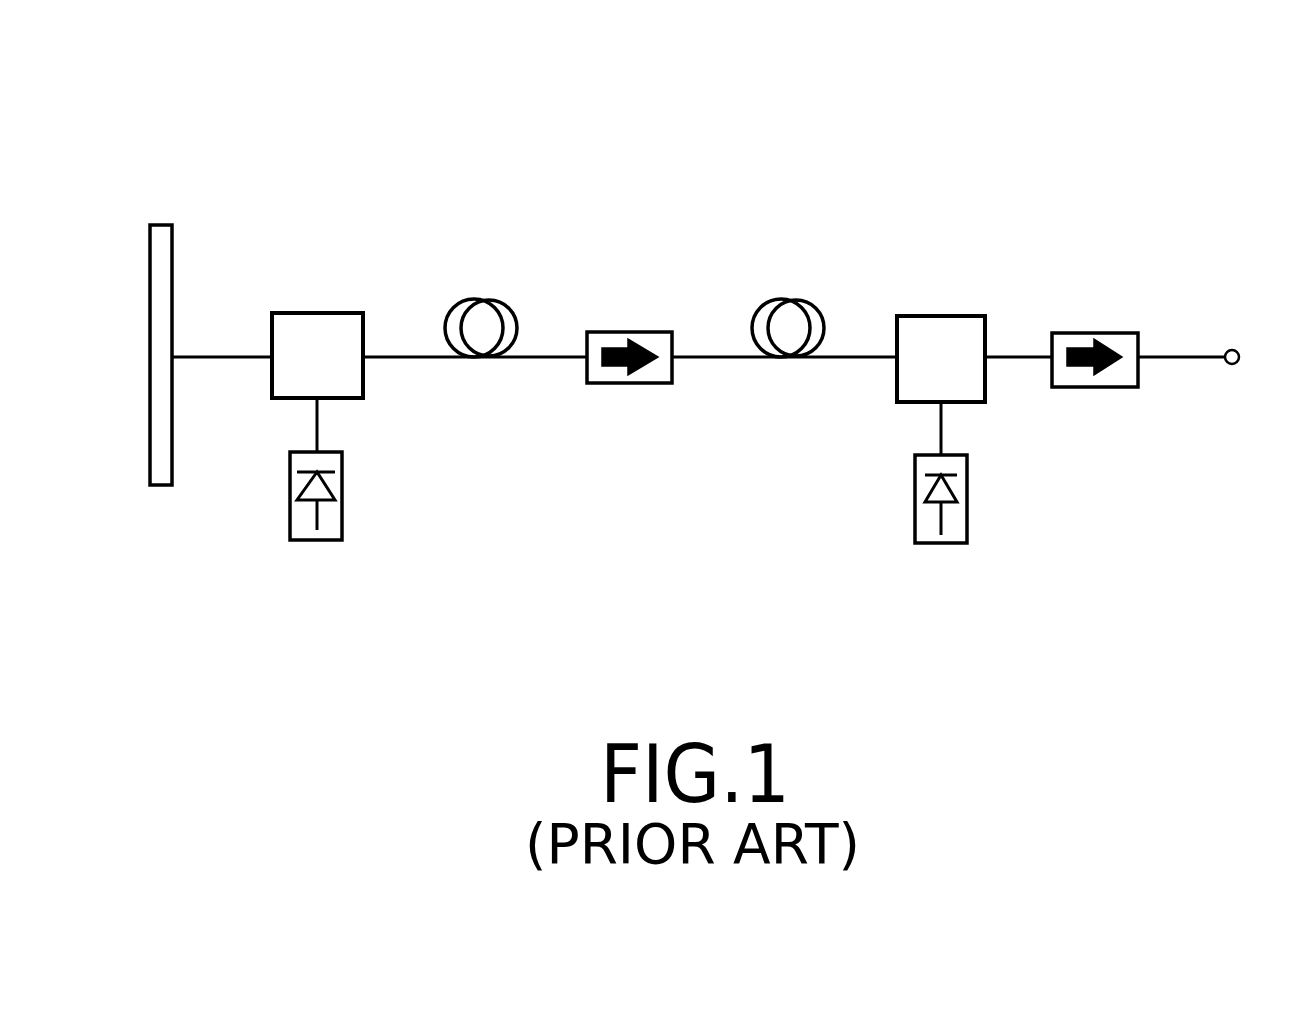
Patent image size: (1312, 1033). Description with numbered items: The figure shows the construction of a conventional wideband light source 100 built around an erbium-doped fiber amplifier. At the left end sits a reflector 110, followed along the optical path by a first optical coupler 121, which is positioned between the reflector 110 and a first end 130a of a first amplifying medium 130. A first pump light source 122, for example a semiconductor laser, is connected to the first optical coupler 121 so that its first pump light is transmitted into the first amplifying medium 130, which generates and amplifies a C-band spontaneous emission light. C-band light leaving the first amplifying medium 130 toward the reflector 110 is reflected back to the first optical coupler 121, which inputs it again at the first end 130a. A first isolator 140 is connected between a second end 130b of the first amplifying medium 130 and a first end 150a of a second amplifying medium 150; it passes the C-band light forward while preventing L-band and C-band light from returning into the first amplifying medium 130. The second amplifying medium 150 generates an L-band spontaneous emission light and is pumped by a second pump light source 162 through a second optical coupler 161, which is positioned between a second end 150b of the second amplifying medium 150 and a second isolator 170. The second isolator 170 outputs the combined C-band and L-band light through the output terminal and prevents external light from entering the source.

The fiber laser system (prior art) 100 is at (768, 59).
The reflector 110 is at (150, 193).
The first optical coupler 121 is at (313, 313).
The first pump light source 122 is at (290, 497).
The first amplifying medium 130 is at (475, 388).
The first end of the first amplifying medium 130a is at (467, 364).
The second end of the first amplifying medium 130b is at (531, 391).
The first isolator 140 is at (631, 332).
The second amplifying medium 150 is at (785, 389).
The first end of the second amplifying medium 150a is at (777, 364).
The second end of the second amplifying medium 150b is at (840, 392).
The second optical coupler 161 is at (942, 316).
The second pump light source 162 is at (915, 497).
The second isolator 170 is at (1096, 333).